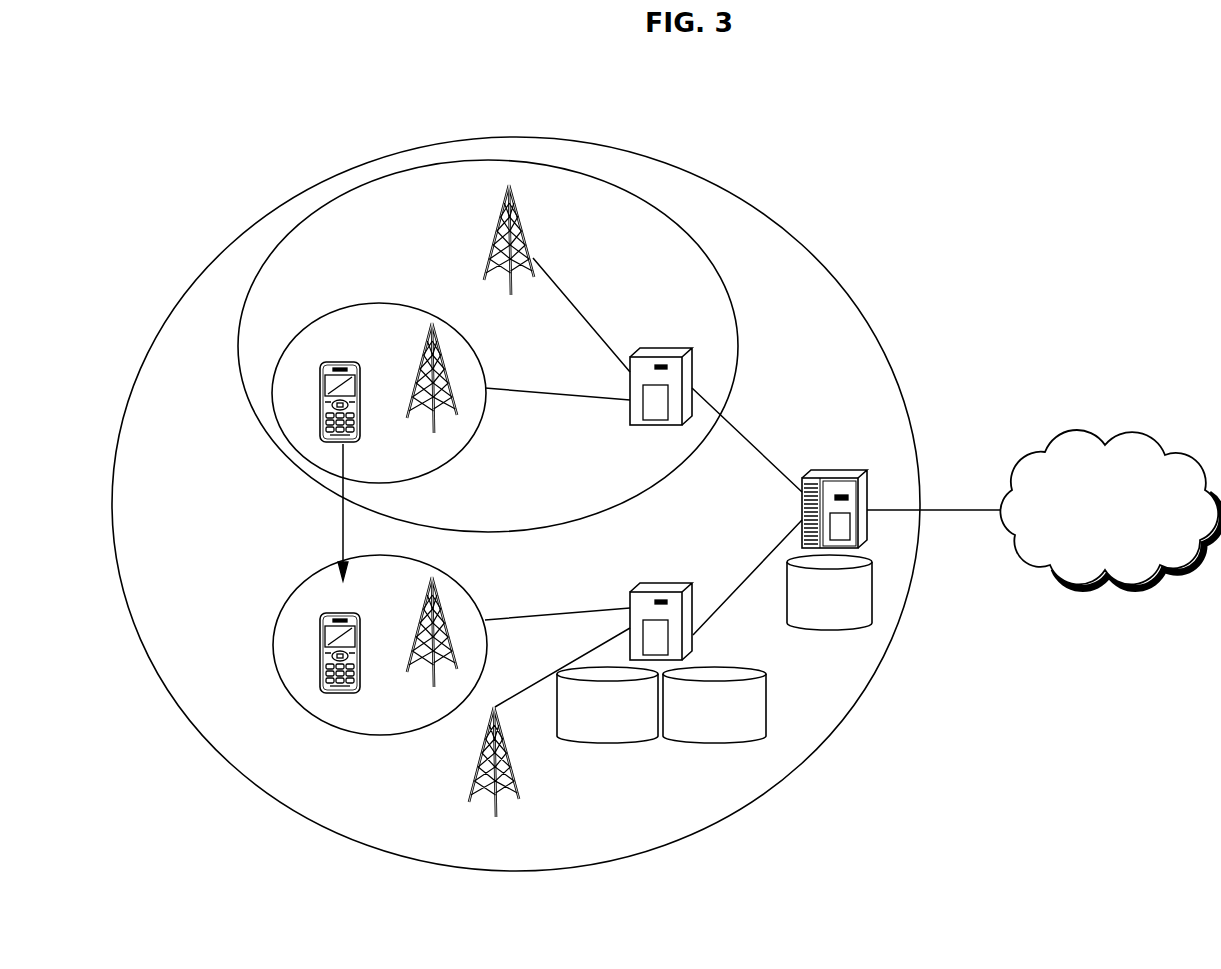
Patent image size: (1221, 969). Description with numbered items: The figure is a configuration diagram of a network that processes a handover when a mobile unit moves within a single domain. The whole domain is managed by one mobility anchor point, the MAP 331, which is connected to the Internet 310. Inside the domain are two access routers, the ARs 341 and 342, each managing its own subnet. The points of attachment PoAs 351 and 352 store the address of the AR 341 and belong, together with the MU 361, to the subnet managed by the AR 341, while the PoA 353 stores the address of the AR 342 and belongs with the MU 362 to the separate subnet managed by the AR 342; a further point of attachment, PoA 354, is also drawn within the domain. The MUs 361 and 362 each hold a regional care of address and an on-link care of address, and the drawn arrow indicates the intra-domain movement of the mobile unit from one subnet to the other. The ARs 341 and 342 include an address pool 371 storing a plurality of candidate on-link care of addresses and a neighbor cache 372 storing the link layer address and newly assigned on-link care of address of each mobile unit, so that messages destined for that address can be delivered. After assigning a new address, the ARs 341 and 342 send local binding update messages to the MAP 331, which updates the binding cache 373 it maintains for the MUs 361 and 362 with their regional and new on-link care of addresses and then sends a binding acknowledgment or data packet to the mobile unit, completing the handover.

The Internet 310 is at (1110, 509).
The mobility anchor point (MAP) 331 is at (852, 494).
The access router (AR) 341 is at (668, 372).
The access router (AR) 342 is at (670, 609).
The point of attachment (PoA) 351 is at (517, 253).
The point of attachment (PoA) 352 is at (417, 392).
The point of attachment (PoA) 353 is at (417, 644).
The point of attachment (PoA) 354 is at (502, 775).
The mobile unit (MU) 361 is at (379, 393).
The mobile unit (MU) 362 is at (380, 645).
The address pool 371 is at (710, 743).
The neighbor cache 372 is at (605, 743).
The binding cache 373 is at (872, 587).